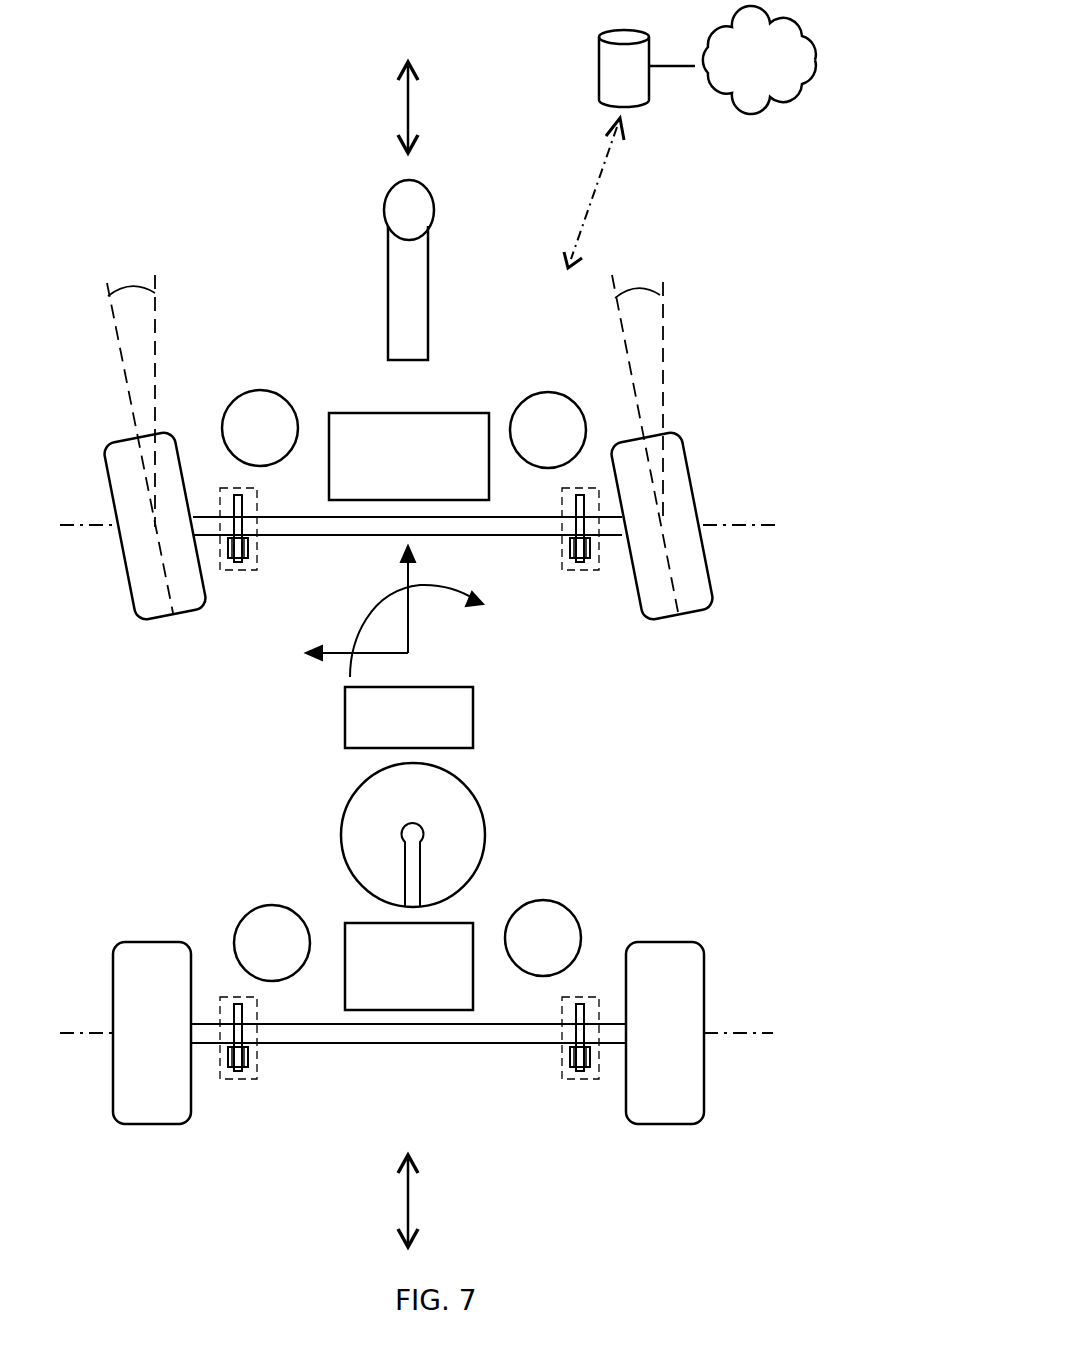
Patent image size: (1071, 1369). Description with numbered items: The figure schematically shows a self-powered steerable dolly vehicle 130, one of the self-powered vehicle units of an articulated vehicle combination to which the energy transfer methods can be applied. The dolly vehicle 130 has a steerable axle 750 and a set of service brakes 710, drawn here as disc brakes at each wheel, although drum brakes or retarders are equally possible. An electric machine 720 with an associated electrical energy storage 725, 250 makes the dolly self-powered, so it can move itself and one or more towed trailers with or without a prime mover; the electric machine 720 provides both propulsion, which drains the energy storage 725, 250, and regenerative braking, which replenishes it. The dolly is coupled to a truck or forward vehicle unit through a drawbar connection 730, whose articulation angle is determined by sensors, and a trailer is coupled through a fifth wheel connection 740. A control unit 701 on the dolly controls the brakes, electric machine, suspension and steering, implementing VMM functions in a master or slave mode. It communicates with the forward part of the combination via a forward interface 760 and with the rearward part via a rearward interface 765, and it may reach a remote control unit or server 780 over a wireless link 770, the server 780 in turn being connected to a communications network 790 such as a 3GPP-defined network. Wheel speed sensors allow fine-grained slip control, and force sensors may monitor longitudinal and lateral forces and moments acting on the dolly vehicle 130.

The self-powered steerable dolly vehicle 130 is at (96, 146).
The control unit 701 is at (409, 456).
The service brakes 710 is at (250, 570).
The electric machine 720 is at (409, 966).
The electrical energy storage (ESS) 725 is at (409, 717).
The energy source 250 is at (409, 717).
The drawbar connection 730 is at (422, 278).
The fifth wheel connection 740 is at (480, 803).
The steerable axle 750 is at (418, 765).
The forward interface 760 is at (433, 107).
The rearward interface 765 is at (434, 1201).
The wireless link 770 is at (604, 193).
The remote control unit or server 780 is at (640, 103).
The communications network 790 is at (759, 60).